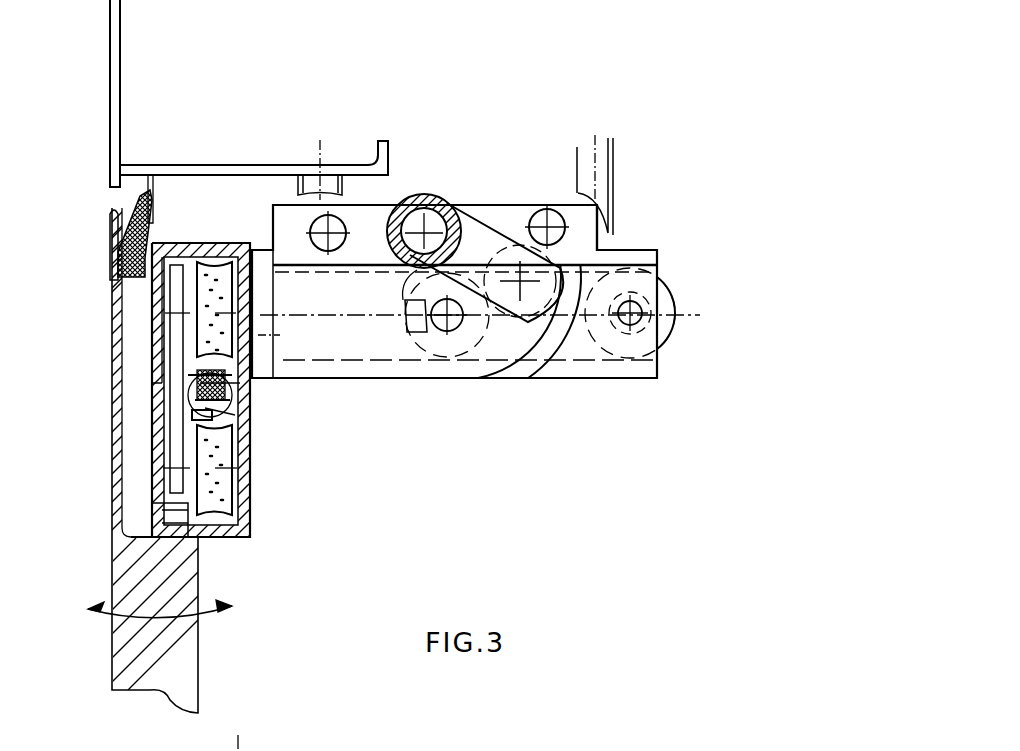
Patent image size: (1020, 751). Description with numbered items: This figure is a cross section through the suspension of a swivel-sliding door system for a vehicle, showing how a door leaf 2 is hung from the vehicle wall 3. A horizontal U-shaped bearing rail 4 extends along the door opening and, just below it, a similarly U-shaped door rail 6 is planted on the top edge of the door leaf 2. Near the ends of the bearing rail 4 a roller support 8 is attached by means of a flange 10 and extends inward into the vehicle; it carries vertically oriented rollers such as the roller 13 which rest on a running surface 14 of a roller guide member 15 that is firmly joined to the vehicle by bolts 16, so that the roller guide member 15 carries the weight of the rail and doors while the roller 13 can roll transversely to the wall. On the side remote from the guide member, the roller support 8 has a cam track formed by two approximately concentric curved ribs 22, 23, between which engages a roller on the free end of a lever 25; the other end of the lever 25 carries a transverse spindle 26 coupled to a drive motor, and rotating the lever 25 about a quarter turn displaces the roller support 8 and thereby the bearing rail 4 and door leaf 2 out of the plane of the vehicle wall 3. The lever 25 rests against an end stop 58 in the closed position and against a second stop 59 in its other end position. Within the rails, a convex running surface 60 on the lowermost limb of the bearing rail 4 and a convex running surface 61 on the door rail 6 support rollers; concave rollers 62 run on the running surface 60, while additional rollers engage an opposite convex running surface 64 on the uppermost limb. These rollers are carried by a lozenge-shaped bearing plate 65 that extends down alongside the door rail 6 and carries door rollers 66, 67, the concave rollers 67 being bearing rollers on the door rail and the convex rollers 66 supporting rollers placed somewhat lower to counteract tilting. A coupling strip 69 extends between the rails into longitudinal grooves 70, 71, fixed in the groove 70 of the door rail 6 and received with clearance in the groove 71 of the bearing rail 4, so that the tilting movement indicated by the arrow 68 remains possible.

The door leaf 2 is at (140, 563).
The vehicle wall 3 is at (117, 63).
The bearing rail 4 is at (200, 243).
The door leaf rail 6 is at (247, 483).
The roller support 8 is at (378, 367).
The flange 10 is at (262, 250).
The roller 13 is at (664, 298).
The running surface 14 is at (590, 362).
The roller guide member 15 is at (636, 258).
The bolt 16 is at (307, 185).
The curved rib 22 is at (520, 345).
The curved rib 23 is at (432, 335).
The lever 25 is at (478, 270).
The transverse spindle 26 is at (426, 230).
The end stop 58 is at (543, 225).
The second stop 59 is at (333, 230).
The running surface 60 is at (195, 357).
The running surface 61 is at (243, 537).
The roller 62 is at (185, 289).
The running surface 64 is at (212, 265).
The bearing plate 65 is at (170, 437).
The door roller 66 is at (180, 510).
The door roller 67 is at (235, 415).
The arrow 68 is at (210, 616).
The coupling strip 69 is at (240, 385).
The longitudinal groove 70 is at (190, 398).
The longitudinal groove 71 is at (200, 378).